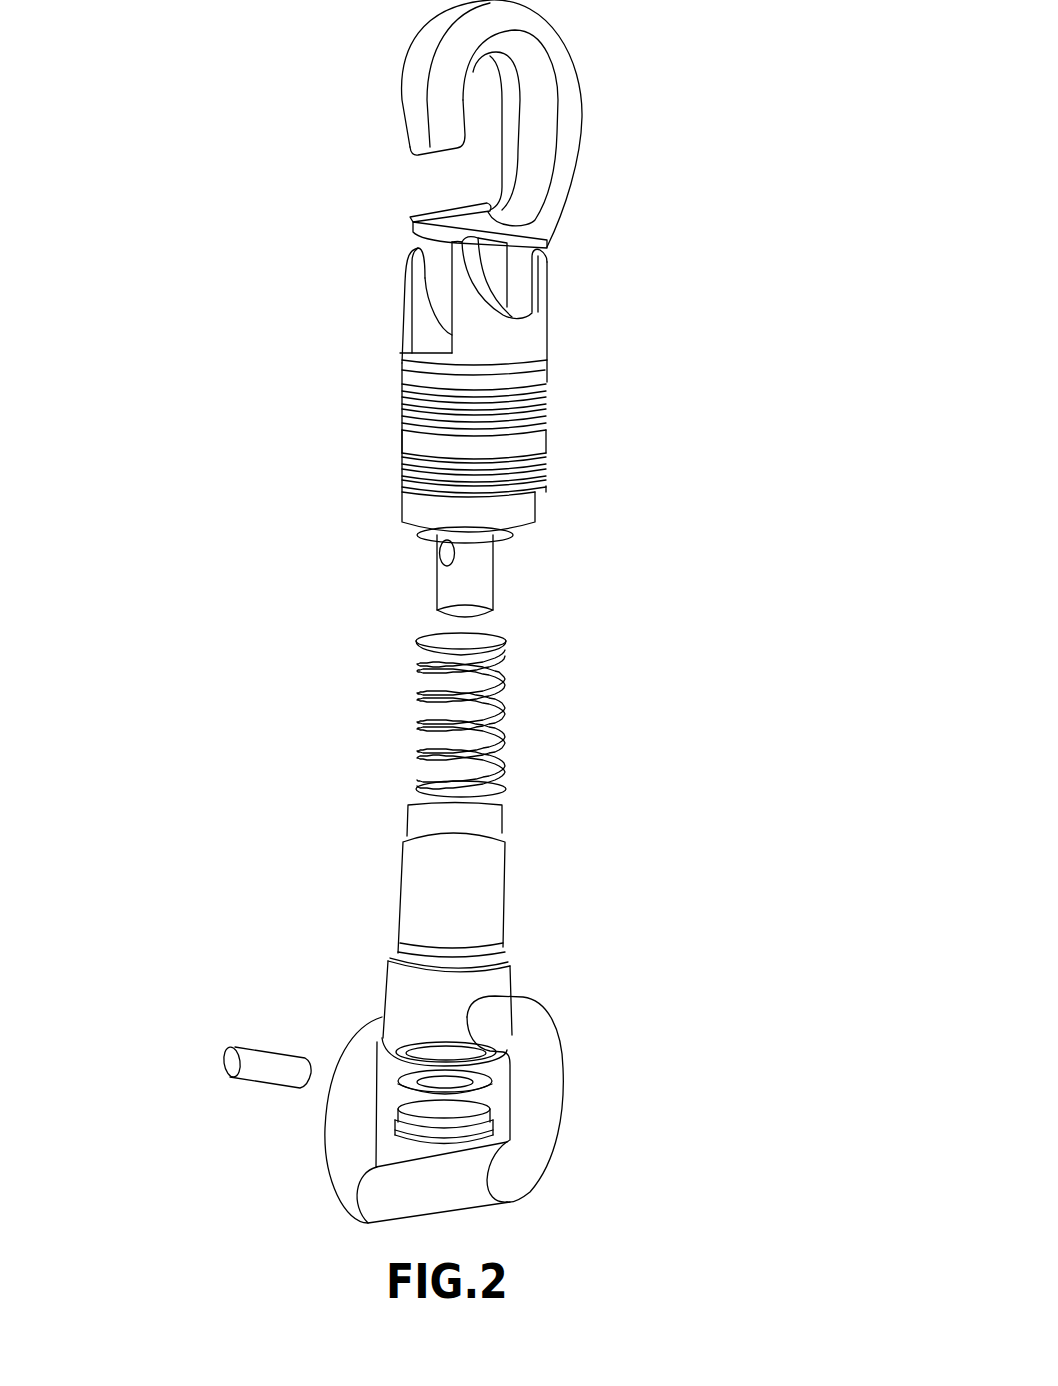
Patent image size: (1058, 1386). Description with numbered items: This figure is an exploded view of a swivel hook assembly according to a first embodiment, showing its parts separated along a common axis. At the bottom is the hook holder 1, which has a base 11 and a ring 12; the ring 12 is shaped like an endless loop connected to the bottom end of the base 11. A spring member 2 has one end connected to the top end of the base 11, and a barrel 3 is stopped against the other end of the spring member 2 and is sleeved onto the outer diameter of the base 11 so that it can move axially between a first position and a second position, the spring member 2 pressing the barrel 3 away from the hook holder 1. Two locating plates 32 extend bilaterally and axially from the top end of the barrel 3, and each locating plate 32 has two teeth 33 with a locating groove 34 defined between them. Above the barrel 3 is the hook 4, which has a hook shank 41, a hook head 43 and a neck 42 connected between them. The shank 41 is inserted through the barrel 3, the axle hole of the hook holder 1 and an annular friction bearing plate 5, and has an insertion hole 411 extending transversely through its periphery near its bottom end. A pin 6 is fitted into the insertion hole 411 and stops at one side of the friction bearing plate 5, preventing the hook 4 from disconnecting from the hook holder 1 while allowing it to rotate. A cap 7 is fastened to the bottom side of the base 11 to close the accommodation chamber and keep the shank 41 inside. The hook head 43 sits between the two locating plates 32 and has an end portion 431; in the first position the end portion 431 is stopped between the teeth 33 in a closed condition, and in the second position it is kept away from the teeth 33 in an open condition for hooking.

The hook holder 1 is at (510, 1013).
The base 11 is at (480, 877).
The ring 12 is at (525, 1030).
The spring member 2 is at (497, 700).
The barrel 3 is at (516, 377).
The locating plates 32 is at (527, 353).
The teeth 33 is at (468, 267).
The locating groove 34 is at (513, 312).
The hook 4 is at (486, 308).
The hook shank 41 is at (485, 570).
The insertion hole 411 is at (447, 553).
The neck 42 is at (440, 222).
The hook head 43 is at (575, 45).
The end portion 431 is at (440, 135).
The friction bearing plate 5 is at (412, 1075).
The pin 6 is at (275, 1065).
The cap 7 is at (455, 1135).